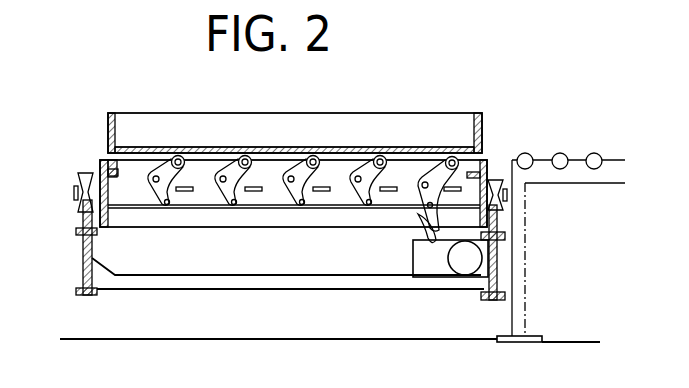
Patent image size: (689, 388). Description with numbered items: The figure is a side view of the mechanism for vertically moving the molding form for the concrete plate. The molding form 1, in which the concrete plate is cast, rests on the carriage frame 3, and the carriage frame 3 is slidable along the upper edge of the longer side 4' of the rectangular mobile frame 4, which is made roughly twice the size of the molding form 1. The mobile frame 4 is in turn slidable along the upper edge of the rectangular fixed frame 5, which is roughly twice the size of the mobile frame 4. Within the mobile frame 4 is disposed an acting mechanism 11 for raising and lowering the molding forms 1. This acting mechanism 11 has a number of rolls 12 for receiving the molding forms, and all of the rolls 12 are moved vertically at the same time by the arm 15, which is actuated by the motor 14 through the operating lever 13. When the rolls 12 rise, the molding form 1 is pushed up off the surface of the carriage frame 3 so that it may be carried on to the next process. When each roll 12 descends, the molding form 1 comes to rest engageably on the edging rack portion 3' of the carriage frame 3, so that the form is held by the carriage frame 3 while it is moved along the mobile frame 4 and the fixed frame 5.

The molding form 1 is at (437, 125).
The carriage frame 3 is at (293, 212).
The edging rack portion 3' is at (294, 168).
The mobile frame 4 is at (288, 298).
The longer side of the mobile frame 4' is at (294, 236).
The fixed frame 5 is at (560, 155).
The acting mechanism 11 is at (393, 210).
The rolls 12 is at (177, 156).
The operating lever 13 is at (198, 209).
The motor 14 is at (465, 275).
The arm 15 is at (450, 259).